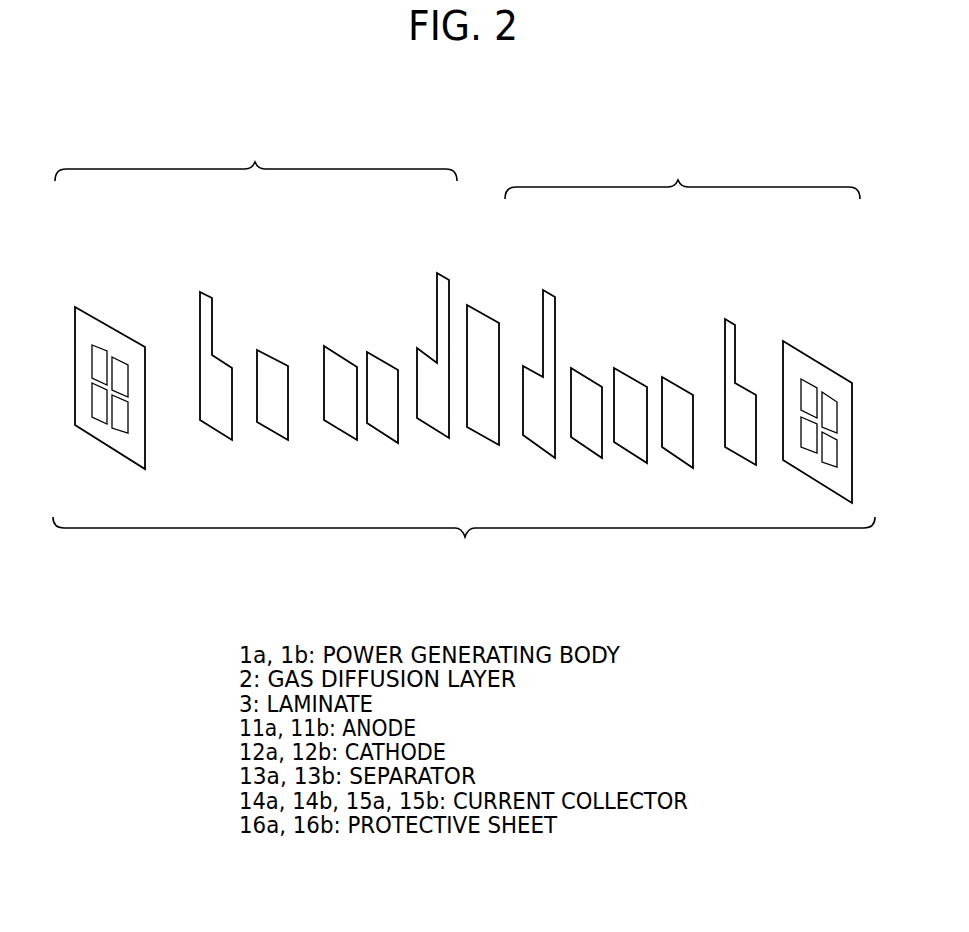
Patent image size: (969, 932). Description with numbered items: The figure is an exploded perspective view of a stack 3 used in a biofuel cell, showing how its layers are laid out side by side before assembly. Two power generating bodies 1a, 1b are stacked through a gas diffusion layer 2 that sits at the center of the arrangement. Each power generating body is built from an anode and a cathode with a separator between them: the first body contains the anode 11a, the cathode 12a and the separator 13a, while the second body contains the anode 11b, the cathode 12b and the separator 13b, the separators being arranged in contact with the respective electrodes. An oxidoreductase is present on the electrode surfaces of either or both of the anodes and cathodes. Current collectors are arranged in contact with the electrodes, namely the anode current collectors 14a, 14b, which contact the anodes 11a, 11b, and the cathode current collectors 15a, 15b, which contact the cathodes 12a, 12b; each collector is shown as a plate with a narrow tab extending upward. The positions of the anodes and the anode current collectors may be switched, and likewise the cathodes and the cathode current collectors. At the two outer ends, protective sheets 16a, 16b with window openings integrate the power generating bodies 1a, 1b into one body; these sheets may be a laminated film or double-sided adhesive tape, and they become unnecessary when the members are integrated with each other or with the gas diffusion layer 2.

The power generating body 1a is at (256, 158).
The power generating body 1b is at (682, 176).
The gas diffusion layer 2 is at (482, 330).
The stack 3 is at (464, 542).
The anode 11a is at (275, 375).
The anode 11b is at (680, 400).
The cathode 12a is at (383, 375).
The cathode 12b is at (582, 385).
The separator 13a is at (338, 372).
The separator 13b is at (634, 390).
The anode current collector 14a is at (210, 303).
The anode current collector 14b is at (730, 327).
The cathode current collector 15a is at (443, 282).
The cathode current collector 15b is at (551, 298).
The protective sheet 16a is at (112, 335).
The protective sheet 16b is at (818, 370).